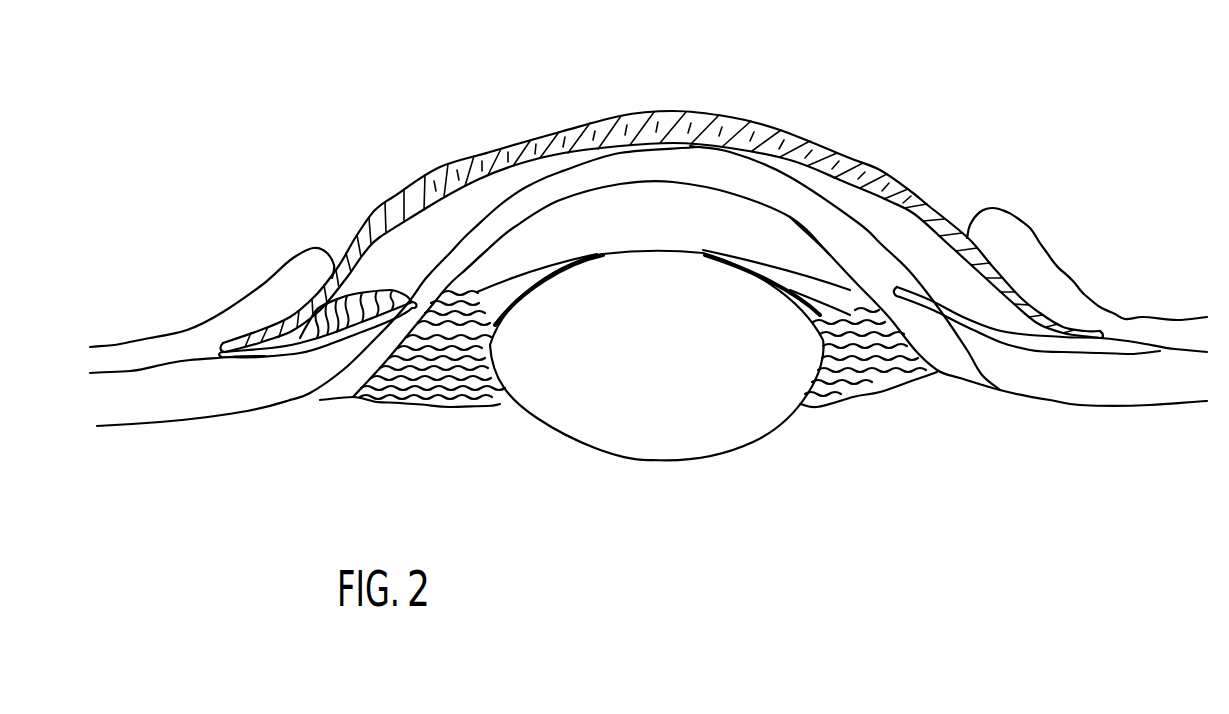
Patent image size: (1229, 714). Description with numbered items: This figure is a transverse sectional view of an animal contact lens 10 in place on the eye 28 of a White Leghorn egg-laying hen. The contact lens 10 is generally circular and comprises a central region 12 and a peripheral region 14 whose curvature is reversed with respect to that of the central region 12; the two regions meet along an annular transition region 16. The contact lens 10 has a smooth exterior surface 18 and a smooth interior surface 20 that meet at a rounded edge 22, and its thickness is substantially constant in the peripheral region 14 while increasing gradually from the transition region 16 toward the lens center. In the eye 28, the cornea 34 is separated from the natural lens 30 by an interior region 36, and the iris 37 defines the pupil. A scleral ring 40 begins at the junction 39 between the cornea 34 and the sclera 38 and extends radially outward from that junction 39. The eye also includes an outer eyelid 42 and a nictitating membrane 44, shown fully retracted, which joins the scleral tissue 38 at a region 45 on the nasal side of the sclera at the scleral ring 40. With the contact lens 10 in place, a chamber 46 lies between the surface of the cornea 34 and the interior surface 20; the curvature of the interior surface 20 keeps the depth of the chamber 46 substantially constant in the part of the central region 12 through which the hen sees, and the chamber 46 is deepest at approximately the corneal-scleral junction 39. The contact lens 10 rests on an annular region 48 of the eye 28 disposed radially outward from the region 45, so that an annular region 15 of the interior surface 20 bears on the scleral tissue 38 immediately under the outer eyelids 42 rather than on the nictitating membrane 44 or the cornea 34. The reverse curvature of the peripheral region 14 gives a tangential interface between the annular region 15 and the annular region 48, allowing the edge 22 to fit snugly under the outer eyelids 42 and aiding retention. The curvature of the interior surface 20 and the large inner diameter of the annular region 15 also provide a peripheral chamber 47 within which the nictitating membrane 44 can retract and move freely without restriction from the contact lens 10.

The contact lens 10 is at (700, 50).
The central region 12 is at (641, 97).
The peripheral region 14 is at (1066, 311).
The annular region 15 is at (230, 343).
The transition region 16 is at (282, 294).
The exterior surface 18 is at (880, 170).
The interior surface 20 is at (910, 213).
The rounded edge 22 is at (1123, 323).
The eye 28 is at (635, 572).
The lens 30 is at (590, 440).
The cornea 34 is at (647, 178).
The interior region 36 is at (696, 231).
The iris 37 is at (567, 262).
The sclera 38 is at (152, 420).
The junction 39 is at (918, 273).
The scleral ring 40 is at (343, 330).
The outer eyelid 42 is at (292, 260).
The nictitating membrane 44 is at (382, 283).
The region 45 is at (267, 352).
The chamber 46 is at (812, 178).
The peripheral chamber 47 is at (343, 287).
The annular region 48 is at (225, 353).